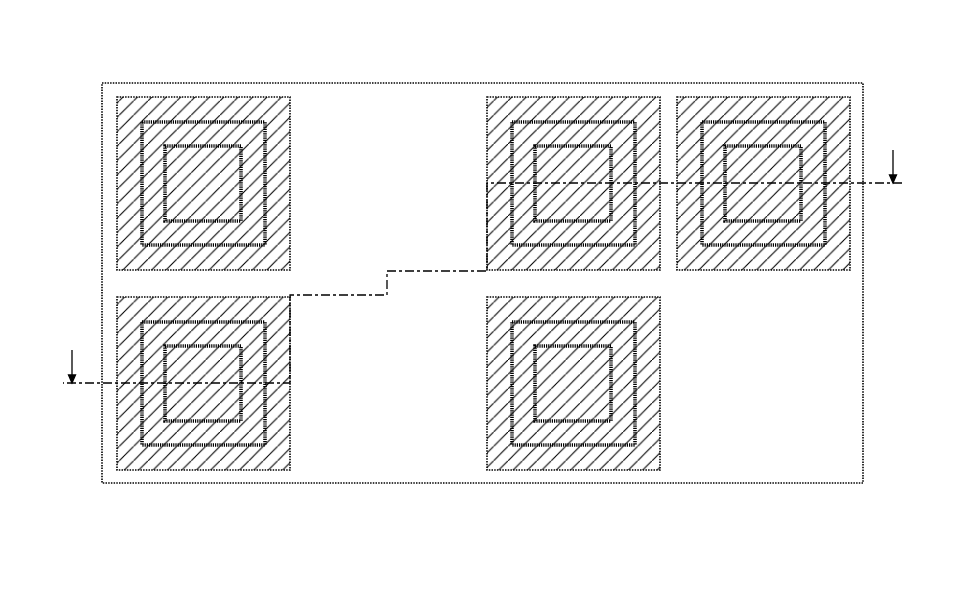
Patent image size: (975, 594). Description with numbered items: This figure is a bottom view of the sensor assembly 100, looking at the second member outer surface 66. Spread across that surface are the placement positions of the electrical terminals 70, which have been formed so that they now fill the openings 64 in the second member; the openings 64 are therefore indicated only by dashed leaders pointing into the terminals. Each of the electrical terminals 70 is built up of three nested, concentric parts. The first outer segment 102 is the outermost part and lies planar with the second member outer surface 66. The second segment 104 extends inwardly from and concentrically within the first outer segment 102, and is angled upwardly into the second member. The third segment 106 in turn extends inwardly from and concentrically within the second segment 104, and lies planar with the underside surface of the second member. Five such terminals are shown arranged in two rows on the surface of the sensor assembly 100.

The sensor assembly 100 is at (745, 66).
The second member outer surface 66 is at (810, 317).
The electrical terminals 70 is at (434, 245).
The first outer segment 102 is at (280, 227).
The second segment 104 is at (252, 190).
The third segment 106 is at (205, 158).
The openings 64 is at (168, 190).